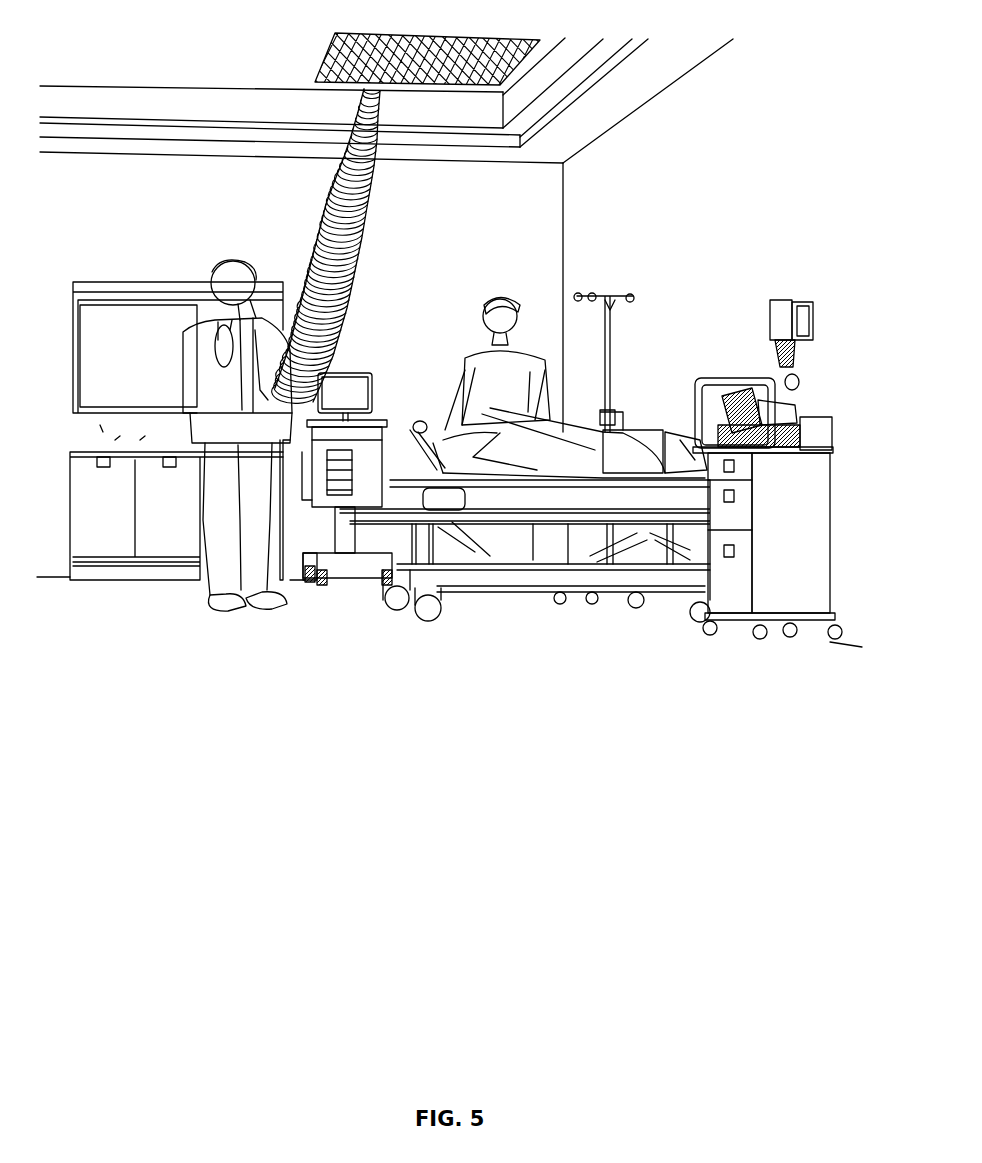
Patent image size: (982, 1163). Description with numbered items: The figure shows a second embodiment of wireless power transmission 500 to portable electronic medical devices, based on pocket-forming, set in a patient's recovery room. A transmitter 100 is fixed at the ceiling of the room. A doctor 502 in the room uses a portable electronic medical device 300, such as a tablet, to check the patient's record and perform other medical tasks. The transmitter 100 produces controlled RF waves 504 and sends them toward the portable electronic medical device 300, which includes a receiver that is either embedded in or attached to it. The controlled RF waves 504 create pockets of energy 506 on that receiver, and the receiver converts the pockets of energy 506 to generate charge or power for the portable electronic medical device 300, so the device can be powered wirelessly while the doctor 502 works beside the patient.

The wireless power transmission 500 is at (150, 70).
The transmitter 100 is at (323, 62).
The controlled RF waves 504 is at (322, 228).
The doctor 502 is at (210, 270).
The pockets of energy 506 is at (192, 410).
The portable electronic medical device 300 is at (323, 373).